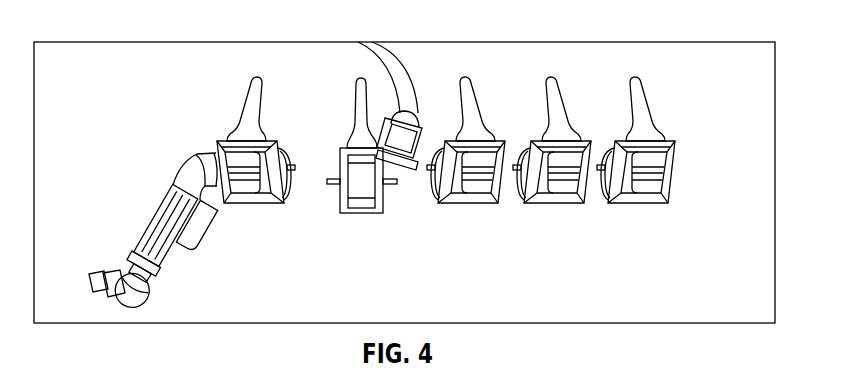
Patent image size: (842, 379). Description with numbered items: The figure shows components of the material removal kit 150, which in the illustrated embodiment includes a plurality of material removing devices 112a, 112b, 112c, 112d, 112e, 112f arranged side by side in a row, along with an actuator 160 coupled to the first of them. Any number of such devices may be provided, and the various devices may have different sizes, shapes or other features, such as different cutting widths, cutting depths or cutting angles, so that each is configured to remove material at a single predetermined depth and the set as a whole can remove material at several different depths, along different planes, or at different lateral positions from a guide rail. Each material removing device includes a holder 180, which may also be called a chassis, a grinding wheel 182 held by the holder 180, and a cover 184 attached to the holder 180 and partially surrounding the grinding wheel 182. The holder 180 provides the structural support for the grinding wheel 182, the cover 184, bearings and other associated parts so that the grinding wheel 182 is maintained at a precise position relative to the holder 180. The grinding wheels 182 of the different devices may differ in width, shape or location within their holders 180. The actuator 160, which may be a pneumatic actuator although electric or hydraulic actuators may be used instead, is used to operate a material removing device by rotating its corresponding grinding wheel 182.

The material removal kit 150 is at (660, 70).
The actuator 160 is at (150, 249).
The grinding wheel 182 is at (240, 203).
The cover 184 is at (256, 133).
The holder 180 is at (290, 176).
The material removing device 112a is at (273, 169).
The material removing device 112b is at (361, 214).
The material removing device 112c is at (398, 164).
The material removing device 112d is at (466, 203).
The material removing device 112e is at (549, 203).
The material removing device 112f is at (638, 203).